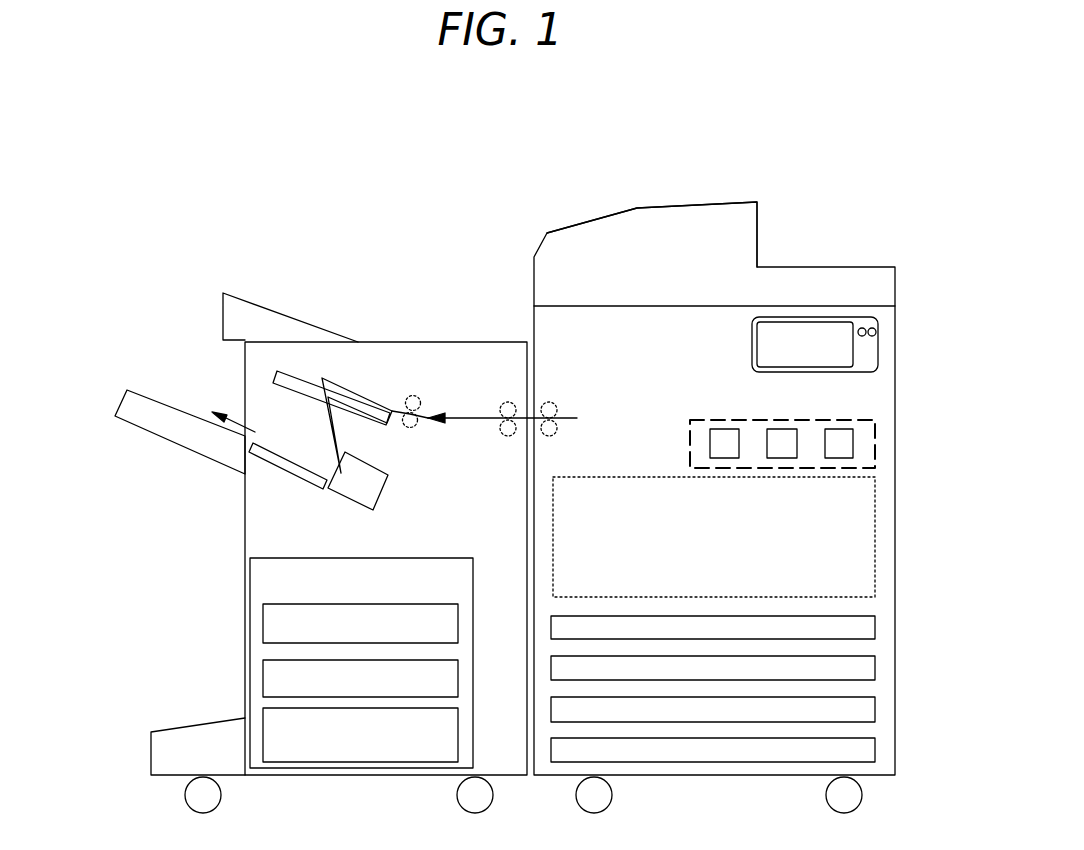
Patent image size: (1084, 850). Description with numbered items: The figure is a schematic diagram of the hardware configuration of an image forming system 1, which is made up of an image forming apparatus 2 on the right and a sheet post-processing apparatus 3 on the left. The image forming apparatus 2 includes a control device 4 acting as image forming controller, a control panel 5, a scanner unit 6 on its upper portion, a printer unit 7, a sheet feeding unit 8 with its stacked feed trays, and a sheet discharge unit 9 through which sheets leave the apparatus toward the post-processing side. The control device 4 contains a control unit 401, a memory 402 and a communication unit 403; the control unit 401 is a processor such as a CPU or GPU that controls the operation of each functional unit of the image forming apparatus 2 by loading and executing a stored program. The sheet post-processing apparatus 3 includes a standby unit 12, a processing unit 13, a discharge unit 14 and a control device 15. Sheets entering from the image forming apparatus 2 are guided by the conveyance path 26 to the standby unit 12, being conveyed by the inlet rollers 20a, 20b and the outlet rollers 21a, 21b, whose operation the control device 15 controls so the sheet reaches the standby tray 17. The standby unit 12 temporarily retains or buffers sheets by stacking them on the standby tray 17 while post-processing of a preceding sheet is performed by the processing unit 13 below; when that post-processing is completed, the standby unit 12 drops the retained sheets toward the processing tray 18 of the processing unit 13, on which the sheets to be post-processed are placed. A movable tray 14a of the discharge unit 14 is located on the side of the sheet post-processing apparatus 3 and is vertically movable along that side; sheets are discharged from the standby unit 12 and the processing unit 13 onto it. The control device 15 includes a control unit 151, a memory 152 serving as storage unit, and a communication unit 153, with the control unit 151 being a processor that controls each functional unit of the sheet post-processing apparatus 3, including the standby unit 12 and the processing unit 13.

The image forming system 1 is at (620, 108).
The image forming apparatus 2 is at (640, 165).
The sheet post-processing apparatus 3 is at (441, 176).
The control device 4 is at (875, 440).
The control unit 401 is at (724, 428).
The memory 402 is at (782, 428).
The communication unit 403 is at (840, 428).
The control panel 5 is at (878, 342).
The scanner unit 6 is at (806, 256).
The printer unit 7 is at (875, 537).
The sheet feeding unit 8 is at (875, 627).
The sheet discharge unit 9 is at (566, 399).
The standby unit 12 is at (390, 425).
The processing unit 13 is at (388, 488).
The discharge unit 14 is at (154, 336).
The movable tray 14a is at (117, 402).
The control device 15 is at (420, 558).
The control unit 151 is at (458, 624).
The memory 152 is at (458, 676).
The communication unit 153 is at (458, 735).
The standby tray 17 is at (297, 378).
The processing tray 18 is at (285, 468).
The inlet roller 20a is at (515, 401).
The inlet roller 20b is at (538, 438).
The outlet roller 21a is at (412, 396).
The outlet roller 21b is at (416, 427).
The conveyance path 26 is at (475, 417).